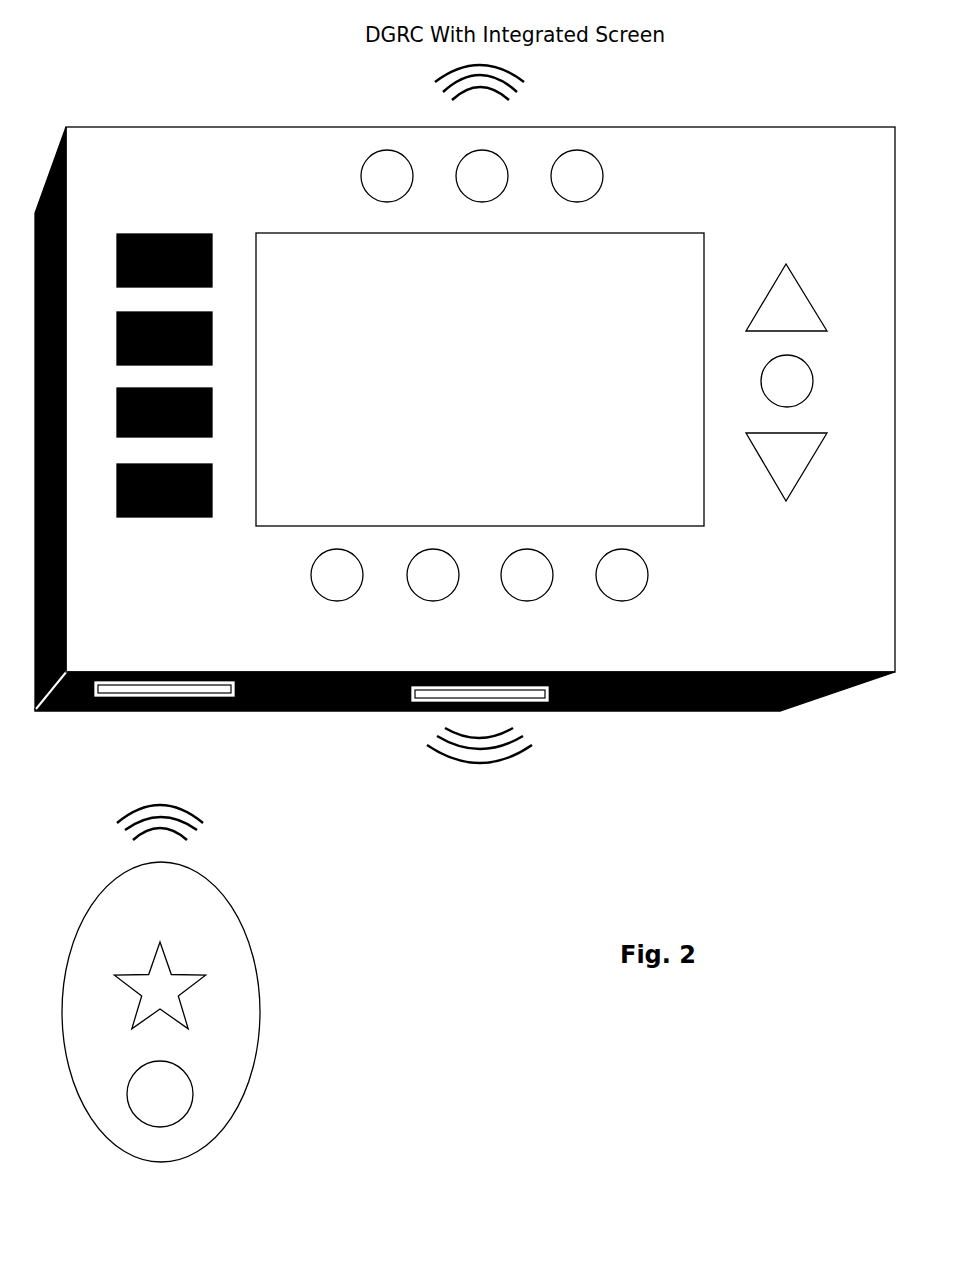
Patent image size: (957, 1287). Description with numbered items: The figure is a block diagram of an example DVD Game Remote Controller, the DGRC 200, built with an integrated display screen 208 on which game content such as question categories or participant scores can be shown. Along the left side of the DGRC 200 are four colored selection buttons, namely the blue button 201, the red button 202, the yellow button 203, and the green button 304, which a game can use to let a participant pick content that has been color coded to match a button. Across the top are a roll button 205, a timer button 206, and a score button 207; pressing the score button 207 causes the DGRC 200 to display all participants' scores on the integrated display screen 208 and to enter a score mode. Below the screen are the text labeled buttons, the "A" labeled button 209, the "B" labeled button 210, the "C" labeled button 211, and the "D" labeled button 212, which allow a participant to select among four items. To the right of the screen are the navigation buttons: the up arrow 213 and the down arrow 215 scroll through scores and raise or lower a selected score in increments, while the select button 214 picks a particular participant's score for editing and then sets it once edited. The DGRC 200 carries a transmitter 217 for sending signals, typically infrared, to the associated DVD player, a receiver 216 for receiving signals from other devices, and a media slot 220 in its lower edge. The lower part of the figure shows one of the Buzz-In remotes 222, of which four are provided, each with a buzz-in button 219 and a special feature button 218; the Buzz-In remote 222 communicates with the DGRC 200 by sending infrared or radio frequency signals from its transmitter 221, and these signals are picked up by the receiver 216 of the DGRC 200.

The DGRC 200 is at (697, 127).
The blue button 201 is at (117, 251).
The red button 202 is at (117, 319).
The yellow button 203 is at (117, 396).
The green button 304 is at (122, 482).
The roll button 205 is at (374, 163).
The timer button 206 is at (469, 163).
The score button 207 is at (564, 163).
The integrated display screen 208 is at (480, 379).
The "A" labeled button 209 is at (332, 598).
The "B" labeled button 210 is at (428, 598).
The "C" labeled button 211 is at (522, 598).
The "D" labeled button 212 is at (617, 598).
The up arrow 213 is at (803, 301).
The select button 214 is at (803, 370).
The down arrow 215 is at (800, 447).
The receiver 216 is at (473, 725).
The transmitter 217 is at (498, 90).
The special feature button 218 is at (177, 1020).
The buzz-in button 219 is at (184, 1082).
The card slot 220 is at (164, 710).
The transmitter 221 is at (174, 830).
The Buzz-In remote 222 is at (258, 965).